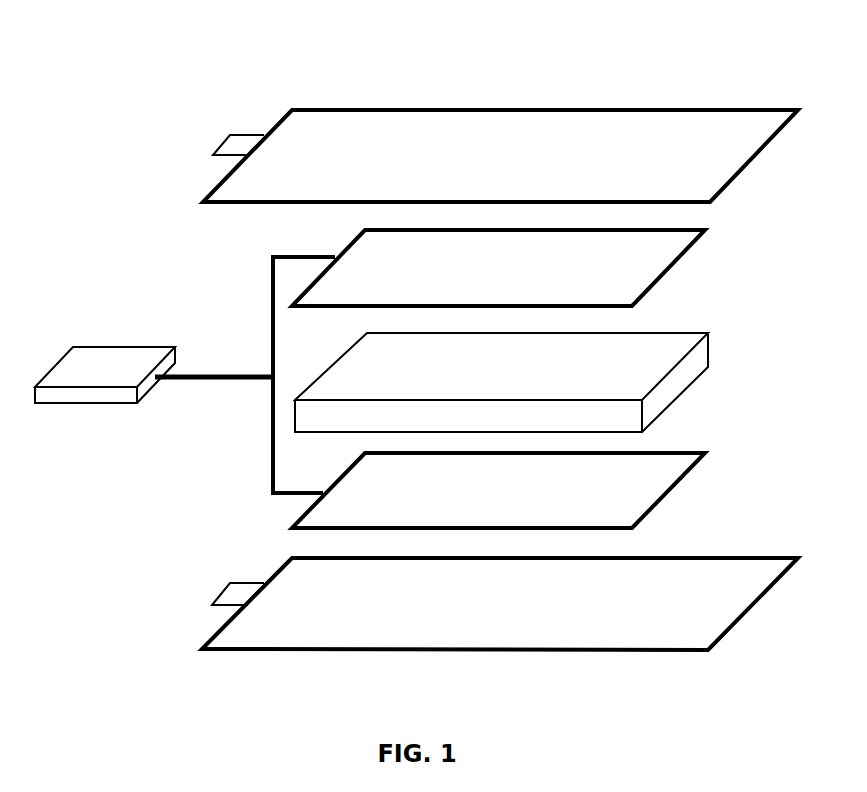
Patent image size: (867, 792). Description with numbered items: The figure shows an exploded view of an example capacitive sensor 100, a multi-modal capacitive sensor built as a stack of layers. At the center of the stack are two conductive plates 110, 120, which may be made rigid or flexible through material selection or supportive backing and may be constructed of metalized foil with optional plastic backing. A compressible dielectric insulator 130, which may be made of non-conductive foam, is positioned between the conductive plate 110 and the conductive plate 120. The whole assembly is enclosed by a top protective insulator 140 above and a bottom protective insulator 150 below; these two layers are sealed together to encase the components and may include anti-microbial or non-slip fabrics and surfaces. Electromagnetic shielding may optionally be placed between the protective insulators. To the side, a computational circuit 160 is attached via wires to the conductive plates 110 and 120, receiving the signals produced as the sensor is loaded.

The capacitive sensor 100 is at (400, 30).
The conductive plate 110 is at (672, 270).
The conductive plate 120 is at (673, 492).
The compressible dielectric insulator 130 is at (675, 382).
The top protective insulator 140 is at (520, 107).
The bottom protective insulator 150 is at (520, 650).
The computational circuit 160 is at (123, 405).